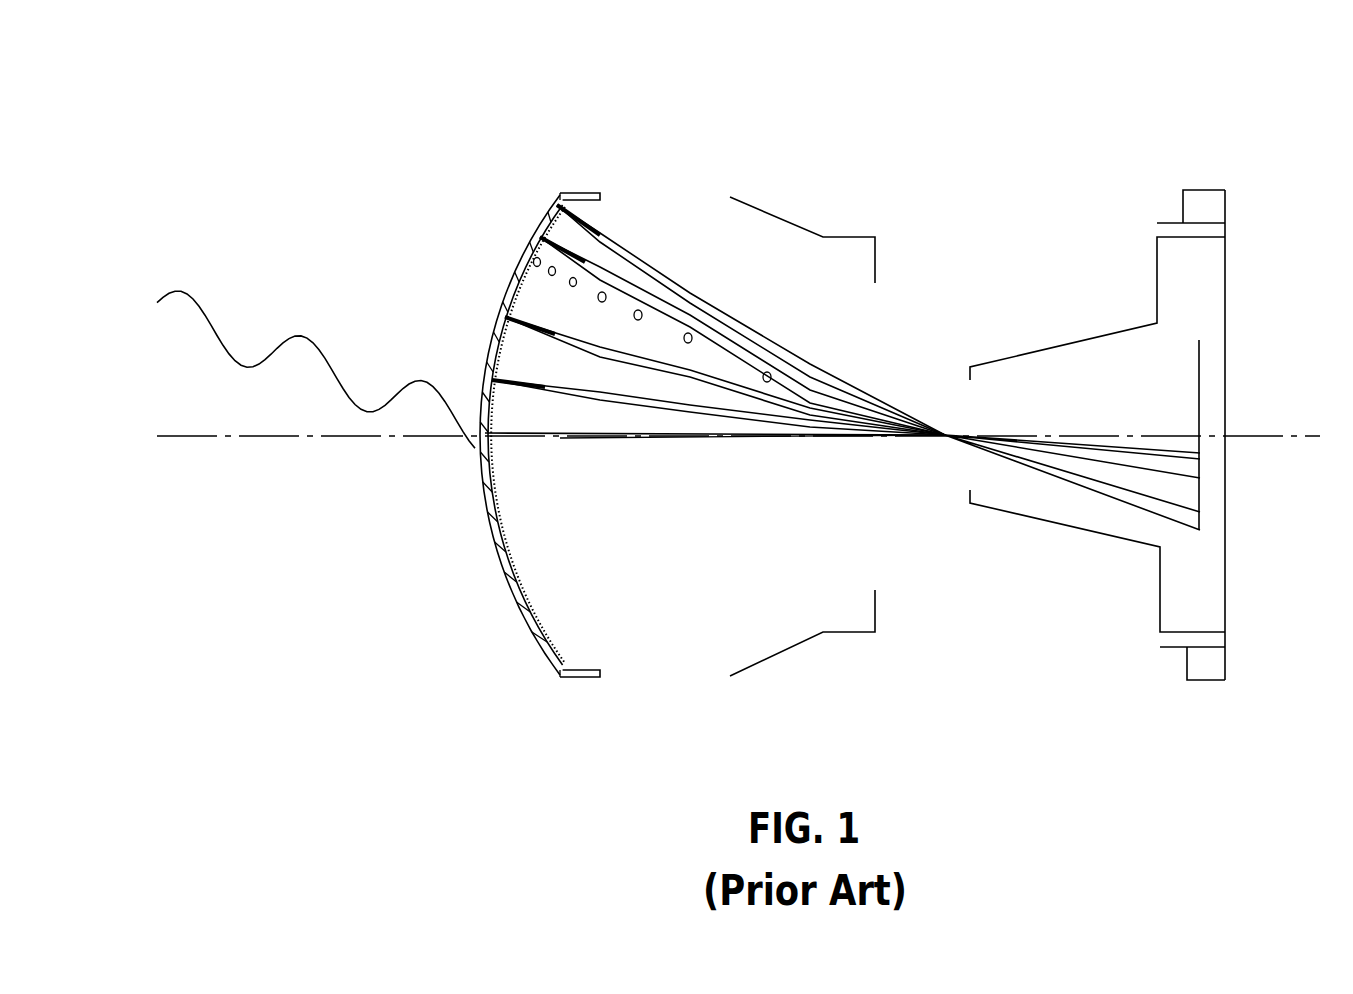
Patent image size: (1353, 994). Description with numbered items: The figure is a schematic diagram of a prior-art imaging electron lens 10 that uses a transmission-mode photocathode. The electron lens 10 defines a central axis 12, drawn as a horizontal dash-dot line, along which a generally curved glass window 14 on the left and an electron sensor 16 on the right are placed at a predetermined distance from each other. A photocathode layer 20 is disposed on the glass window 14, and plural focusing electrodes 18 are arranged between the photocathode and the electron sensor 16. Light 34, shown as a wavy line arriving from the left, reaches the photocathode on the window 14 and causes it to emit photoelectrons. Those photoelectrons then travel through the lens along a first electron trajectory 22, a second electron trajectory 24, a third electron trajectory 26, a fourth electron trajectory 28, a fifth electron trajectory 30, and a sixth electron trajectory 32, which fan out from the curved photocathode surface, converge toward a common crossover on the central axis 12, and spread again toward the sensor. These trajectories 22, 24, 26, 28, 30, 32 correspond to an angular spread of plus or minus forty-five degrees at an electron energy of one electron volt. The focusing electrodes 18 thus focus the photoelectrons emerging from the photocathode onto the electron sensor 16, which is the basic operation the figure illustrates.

The electron lens 10 is at (343, 74).
The central axis 12 is at (293, 440).
The glass window 14 is at (532, 643).
The electron sensor 16 is at (1215, 520).
The focusing electrodes 18 is at (833, 240).
The photocathode layer 20 is at (508, 567).
The first electron trajectory 22 is at (594, 440).
The second electron trajectory 24 is at (657, 408).
The third electron trajectory 26 is at (710, 388).
The fourth electron trajectory 28 is at (548, 270).
The fifth electron trajectory 30 is at (598, 245).
The sixth electron trajectory 32 is at (647, 262).
The light 34 is at (306, 336).